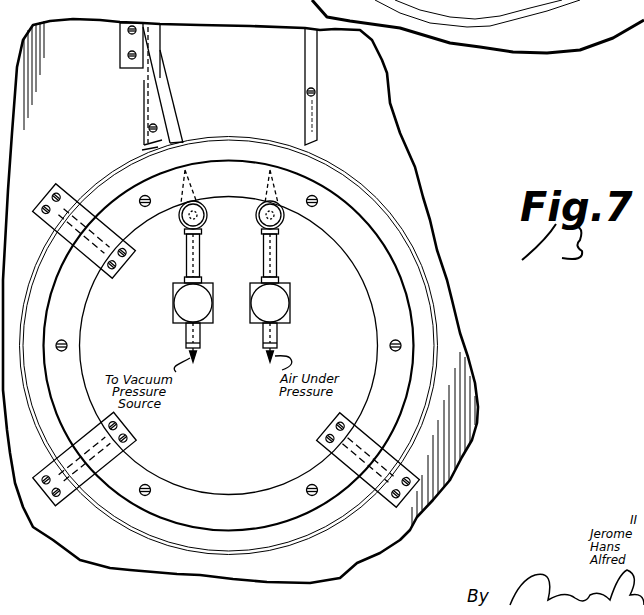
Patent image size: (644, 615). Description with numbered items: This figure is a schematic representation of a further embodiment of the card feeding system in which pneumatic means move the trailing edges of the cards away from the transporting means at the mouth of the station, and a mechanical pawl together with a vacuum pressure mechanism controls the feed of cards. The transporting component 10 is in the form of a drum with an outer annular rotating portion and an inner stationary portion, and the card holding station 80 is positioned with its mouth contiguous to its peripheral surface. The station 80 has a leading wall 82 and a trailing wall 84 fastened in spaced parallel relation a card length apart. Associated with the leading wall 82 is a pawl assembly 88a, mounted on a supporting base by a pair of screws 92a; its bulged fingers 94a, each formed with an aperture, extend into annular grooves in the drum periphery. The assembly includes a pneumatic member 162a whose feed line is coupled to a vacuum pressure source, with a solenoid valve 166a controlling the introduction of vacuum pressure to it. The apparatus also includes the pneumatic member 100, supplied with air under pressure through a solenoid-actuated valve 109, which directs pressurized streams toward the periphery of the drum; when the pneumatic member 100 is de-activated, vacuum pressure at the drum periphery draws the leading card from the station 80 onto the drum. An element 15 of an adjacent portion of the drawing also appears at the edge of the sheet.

The transporting component 10 is at (231, 524).
The adjacent figure element 15 is at (478, 26).
The card holding station 80 is at (252, 60).
The leading wall 82 is at (156, 57).
The trailing wall 84 is at (314, 60).
The pawl assembly 88a is at (145, 93).
The screws 92a is at (127, 30).
The fingers 94a is at (146, 146).
The pneumatic member 100 is at (277, 185).
The solenoid-actuated valve 109 is at (283, 318).
The pneumatic member 162a is at (194, 187).
The solenoid valve 166a is at (190, 307).